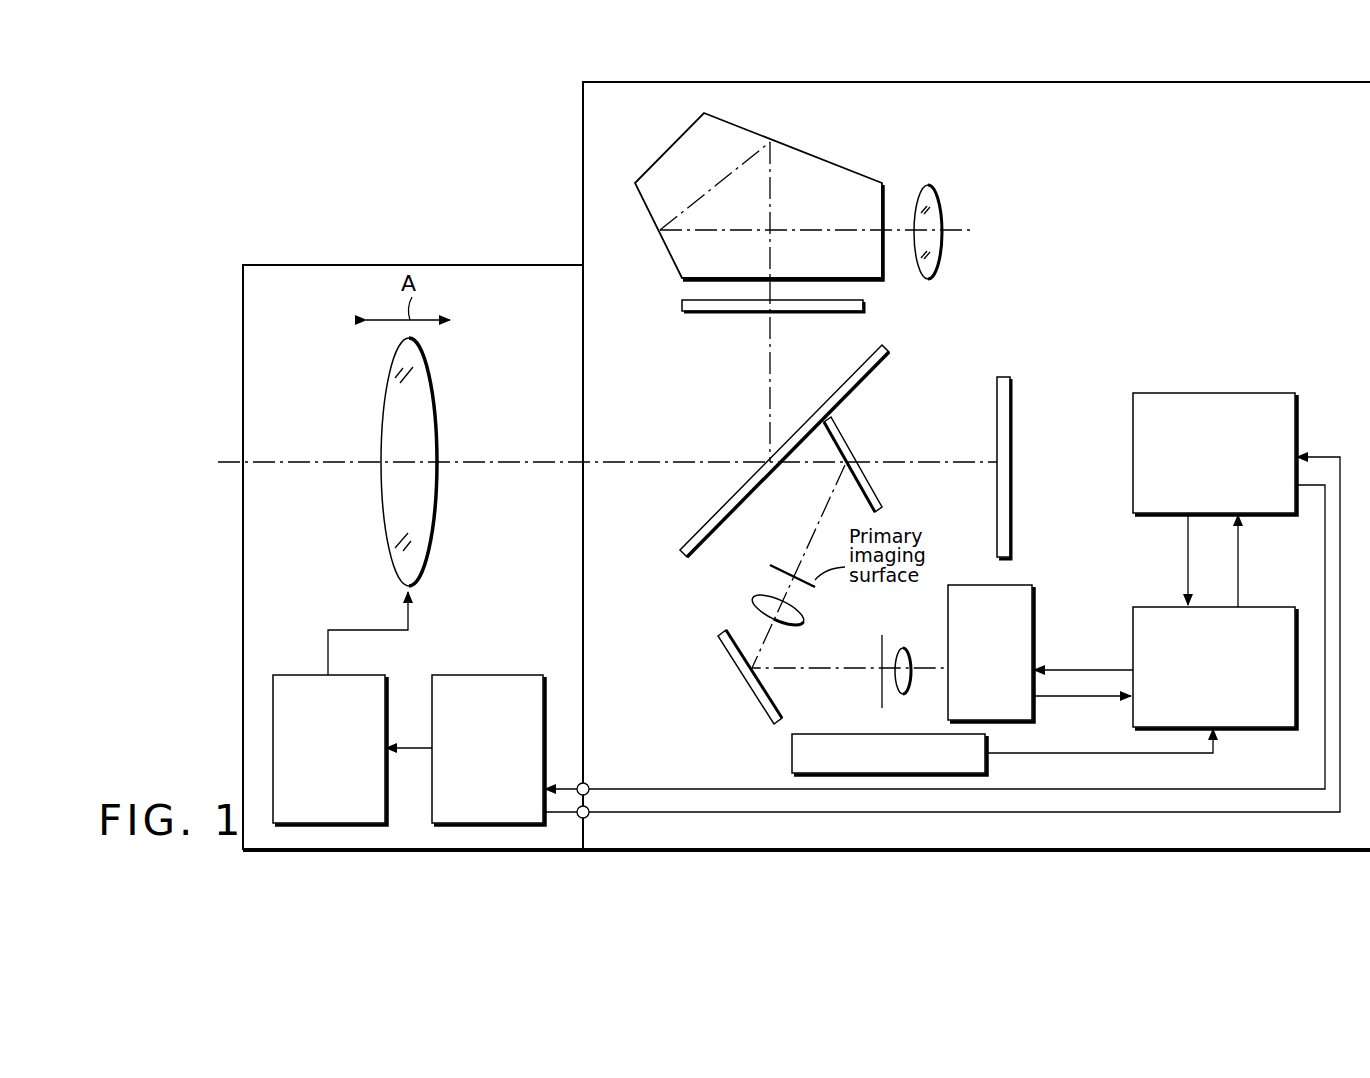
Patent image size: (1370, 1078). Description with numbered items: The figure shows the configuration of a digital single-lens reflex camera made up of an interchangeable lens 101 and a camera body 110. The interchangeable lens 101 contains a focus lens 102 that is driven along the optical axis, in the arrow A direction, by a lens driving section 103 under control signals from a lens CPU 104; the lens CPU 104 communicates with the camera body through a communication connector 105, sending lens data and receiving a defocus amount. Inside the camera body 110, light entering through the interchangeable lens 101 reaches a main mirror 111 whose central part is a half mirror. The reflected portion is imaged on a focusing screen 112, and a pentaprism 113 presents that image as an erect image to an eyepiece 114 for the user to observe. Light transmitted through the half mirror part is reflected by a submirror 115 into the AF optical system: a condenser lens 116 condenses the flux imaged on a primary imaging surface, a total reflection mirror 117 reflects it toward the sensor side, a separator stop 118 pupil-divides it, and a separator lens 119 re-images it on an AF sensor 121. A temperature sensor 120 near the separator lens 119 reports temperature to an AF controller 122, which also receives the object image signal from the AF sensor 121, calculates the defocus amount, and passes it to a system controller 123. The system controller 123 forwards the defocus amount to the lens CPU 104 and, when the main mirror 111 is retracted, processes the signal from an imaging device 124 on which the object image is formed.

The interchangeable lens 101 is at (493, 265).
The focus lens 102 is at (437, 398).
The lens driving section 103 is at (293, 675).
The lens CPU 104 is at (508, 675).
The communication connector 105 is at (589, 808).
The camera body 110 is at (1200, 82).
The main mirror 111 is at (868, 377).
The focusing screen 112 is at (863, 305).
The pentaprism 113 is at (811, 155).
The eyepiece 114 is at (942, 207).
The submirror 115 is at (875, 494).
The condenser lens 116 is at (755, 600).
The total reflection mirror 117 is at (718, 650).
The separator stop 118 is at (880, 654).
The separator lens 119 is at (903, 650).
The temperature sensor 120 is at (792, 744).
The AF sensor 121 is at (1033, 598).
The AF controller 122 is at (1273, 607).
The system controller 123 is at (1235, 393).
The imaging device 124 is at (1003, 377).